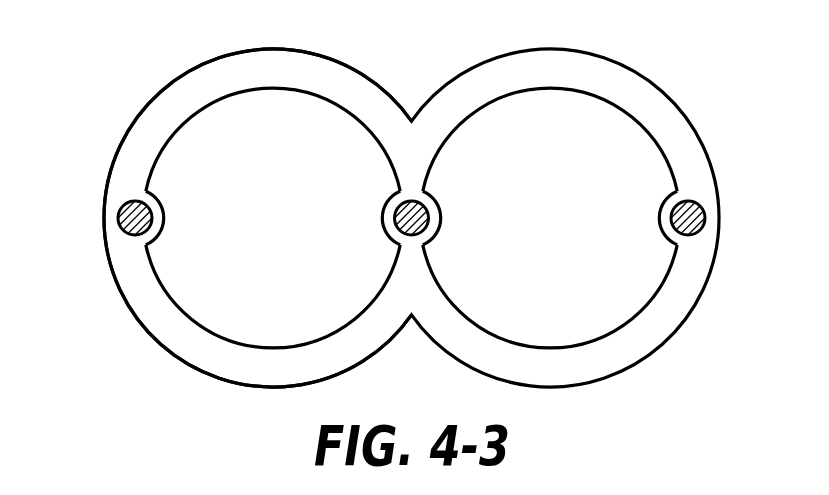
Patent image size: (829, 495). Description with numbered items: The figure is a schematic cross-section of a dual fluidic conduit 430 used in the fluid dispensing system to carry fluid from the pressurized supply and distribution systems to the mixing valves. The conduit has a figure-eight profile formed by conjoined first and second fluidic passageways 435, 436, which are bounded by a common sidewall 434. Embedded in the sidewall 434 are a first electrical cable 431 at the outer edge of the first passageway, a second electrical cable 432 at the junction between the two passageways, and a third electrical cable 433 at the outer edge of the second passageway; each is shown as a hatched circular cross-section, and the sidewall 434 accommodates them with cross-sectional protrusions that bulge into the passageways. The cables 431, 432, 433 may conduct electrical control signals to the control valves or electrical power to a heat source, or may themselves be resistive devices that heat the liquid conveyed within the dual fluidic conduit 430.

The dual fluidic conduit 430 is at (405, 82).
The first electrical cable 431 is at (140, 216).
The second electrical cable 432 is at (413, 220).
The third electrical cable 433 is at (685, 218).
The sidewall 434 is at (162, 117).
The first fluidic passageway 435 is at (200, 273).
The second fluidic passageway 436 is at (587, 138).